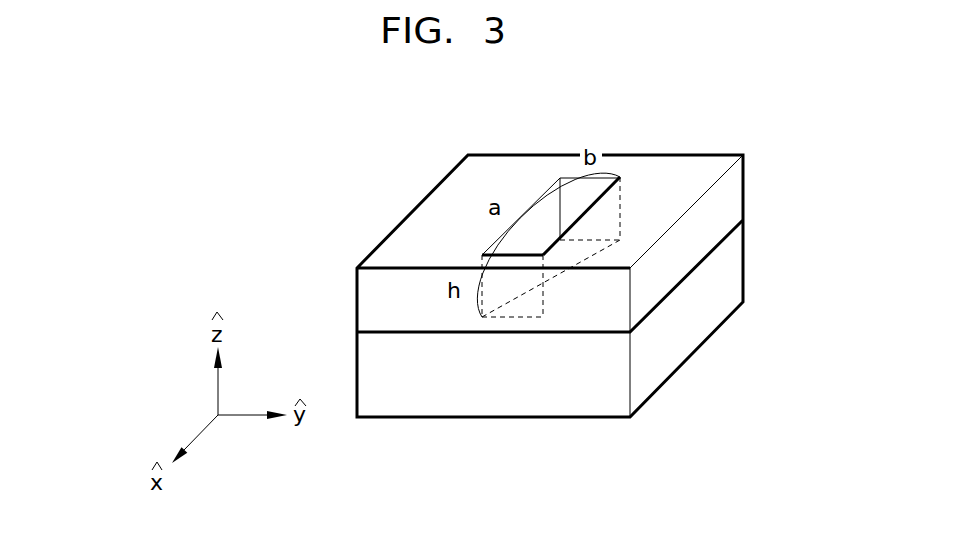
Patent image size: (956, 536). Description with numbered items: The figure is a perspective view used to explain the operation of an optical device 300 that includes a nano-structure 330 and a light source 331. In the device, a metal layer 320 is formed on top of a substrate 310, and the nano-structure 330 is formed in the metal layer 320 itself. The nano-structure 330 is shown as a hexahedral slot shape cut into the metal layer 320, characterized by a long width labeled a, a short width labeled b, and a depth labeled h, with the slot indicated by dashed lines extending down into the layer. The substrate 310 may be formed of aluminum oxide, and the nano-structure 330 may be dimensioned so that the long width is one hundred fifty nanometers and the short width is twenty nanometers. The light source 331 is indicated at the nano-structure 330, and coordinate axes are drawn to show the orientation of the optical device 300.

The optical device 300 is at (368, 153).
The substrate 310 is at (357, 375).
The metal layer 320 is at (357, 302).
The nano-structure 330 is at (563, 196).
The light source 331 is at (545, 237).